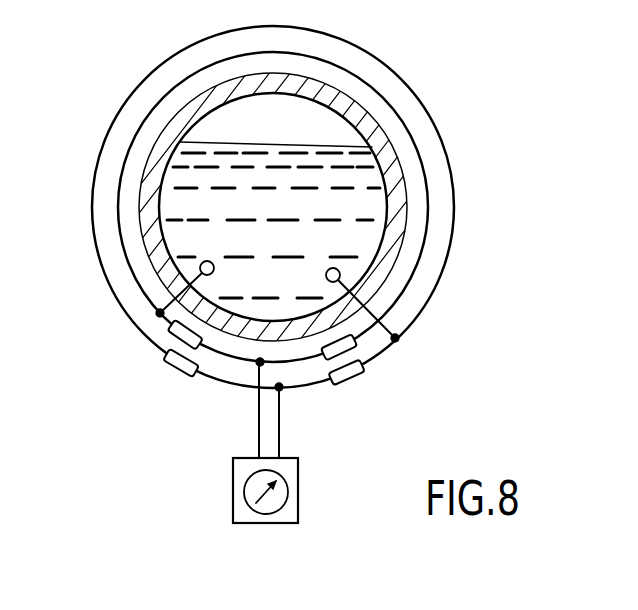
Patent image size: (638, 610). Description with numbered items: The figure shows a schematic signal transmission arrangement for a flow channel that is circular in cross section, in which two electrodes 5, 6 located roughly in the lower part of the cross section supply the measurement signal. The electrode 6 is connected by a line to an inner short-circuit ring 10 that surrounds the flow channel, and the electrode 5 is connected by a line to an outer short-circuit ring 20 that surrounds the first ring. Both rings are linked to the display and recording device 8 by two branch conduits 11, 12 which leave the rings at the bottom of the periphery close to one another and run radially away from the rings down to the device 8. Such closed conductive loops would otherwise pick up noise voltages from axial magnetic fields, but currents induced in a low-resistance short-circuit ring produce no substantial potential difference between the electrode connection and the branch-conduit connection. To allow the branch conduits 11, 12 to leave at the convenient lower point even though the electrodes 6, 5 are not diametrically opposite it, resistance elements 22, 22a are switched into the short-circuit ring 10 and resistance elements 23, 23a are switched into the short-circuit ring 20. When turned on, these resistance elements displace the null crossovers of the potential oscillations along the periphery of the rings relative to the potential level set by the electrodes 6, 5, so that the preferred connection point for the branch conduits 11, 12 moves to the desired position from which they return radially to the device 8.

The electrode 5 is at (342, 266).
The electrode 6 is at (203, 262).
The display and recording device 8 is at (298, 494).
The short-circuit ring 10 is at (377, 92).
The branch conduit 11 is at (259, 413).
The branch conduit 12 is at (279, 432).
The short-circuit ring 20 is at (427, 115).
The resistance element 22 is at (165, 343).
The resistance element 22a is at (365, 355).
The resistance element 23 is at (358, 384).
The resistance element 23a is at (178, 376).